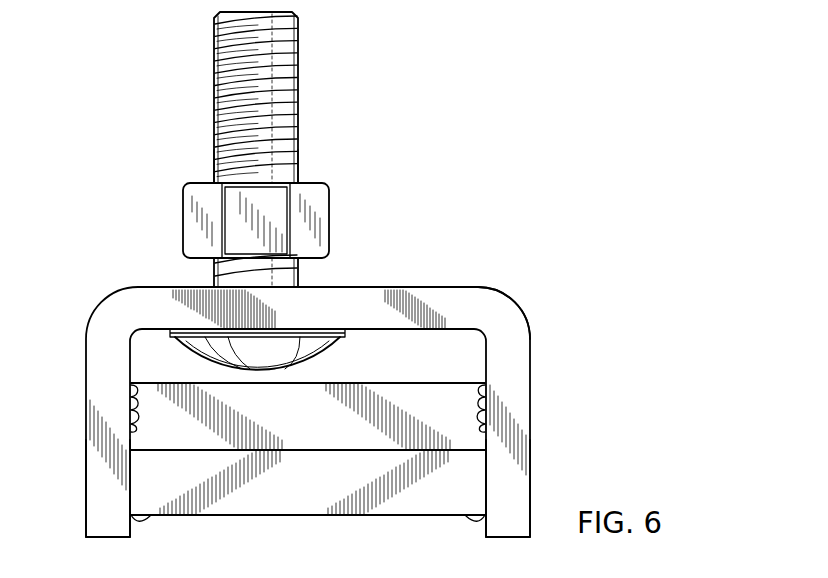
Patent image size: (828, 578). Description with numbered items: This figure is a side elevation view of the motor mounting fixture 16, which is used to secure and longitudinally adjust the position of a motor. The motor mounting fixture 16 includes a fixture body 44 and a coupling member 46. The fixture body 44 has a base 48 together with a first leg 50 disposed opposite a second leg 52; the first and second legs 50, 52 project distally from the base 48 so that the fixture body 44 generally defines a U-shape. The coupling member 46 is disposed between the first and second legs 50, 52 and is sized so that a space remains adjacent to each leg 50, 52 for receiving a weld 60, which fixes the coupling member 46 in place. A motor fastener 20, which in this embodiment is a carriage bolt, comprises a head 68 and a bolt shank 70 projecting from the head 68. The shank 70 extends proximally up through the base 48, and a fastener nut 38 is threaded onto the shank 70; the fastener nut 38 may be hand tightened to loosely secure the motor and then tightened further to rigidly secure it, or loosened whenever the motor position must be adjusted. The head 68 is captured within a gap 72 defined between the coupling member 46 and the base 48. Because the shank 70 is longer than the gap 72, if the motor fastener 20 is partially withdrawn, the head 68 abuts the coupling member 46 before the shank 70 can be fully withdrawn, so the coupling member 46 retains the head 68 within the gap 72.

The motor mounting fixture 16 is at (141, 119).
The motor fastener 20 is at (300, 67).
The bolt shank 70 is at (297, 168).
The fastener nut 38 is at (330, 209).
The fixture body 44 is at (139, 287).
The base 48 is at (453, 300).
The first leg 50 is at (106, 541).
The second leg 52 is at (511, 542).
The coupling member 46 is at (304, 516).
The weld 60 is at (136, 386).
The head 68 is at (312, 354).
The gap 72 is at (344, 357).